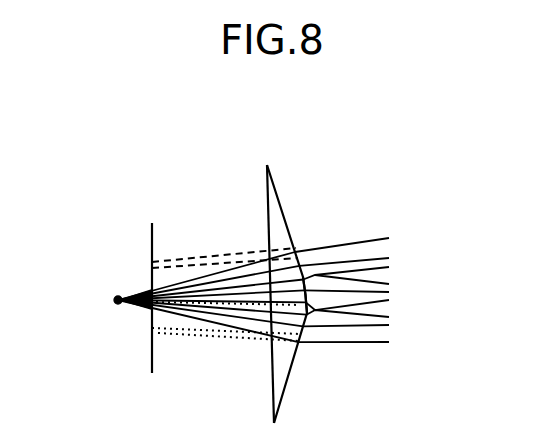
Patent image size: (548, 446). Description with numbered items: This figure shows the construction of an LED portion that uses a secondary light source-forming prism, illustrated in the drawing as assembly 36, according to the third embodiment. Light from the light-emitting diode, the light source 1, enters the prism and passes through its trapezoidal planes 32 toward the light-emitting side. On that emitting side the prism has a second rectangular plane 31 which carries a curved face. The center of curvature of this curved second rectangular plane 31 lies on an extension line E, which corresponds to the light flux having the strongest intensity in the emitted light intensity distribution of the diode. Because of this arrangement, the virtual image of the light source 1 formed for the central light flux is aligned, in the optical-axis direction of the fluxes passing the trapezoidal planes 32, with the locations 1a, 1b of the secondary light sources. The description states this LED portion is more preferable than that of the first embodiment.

The light source 1 is at (113, 298).
The secondary light source location 1a is at (151, 262).
The secondary light source location 1b is at (151, 328).
The second rectangular plane 31 is at (310, 273).
The trapezoidal planes 32 is at (274, 187).
The illumination optical unit 36 is at (244, 263).
The extension line E is at (376, 286).